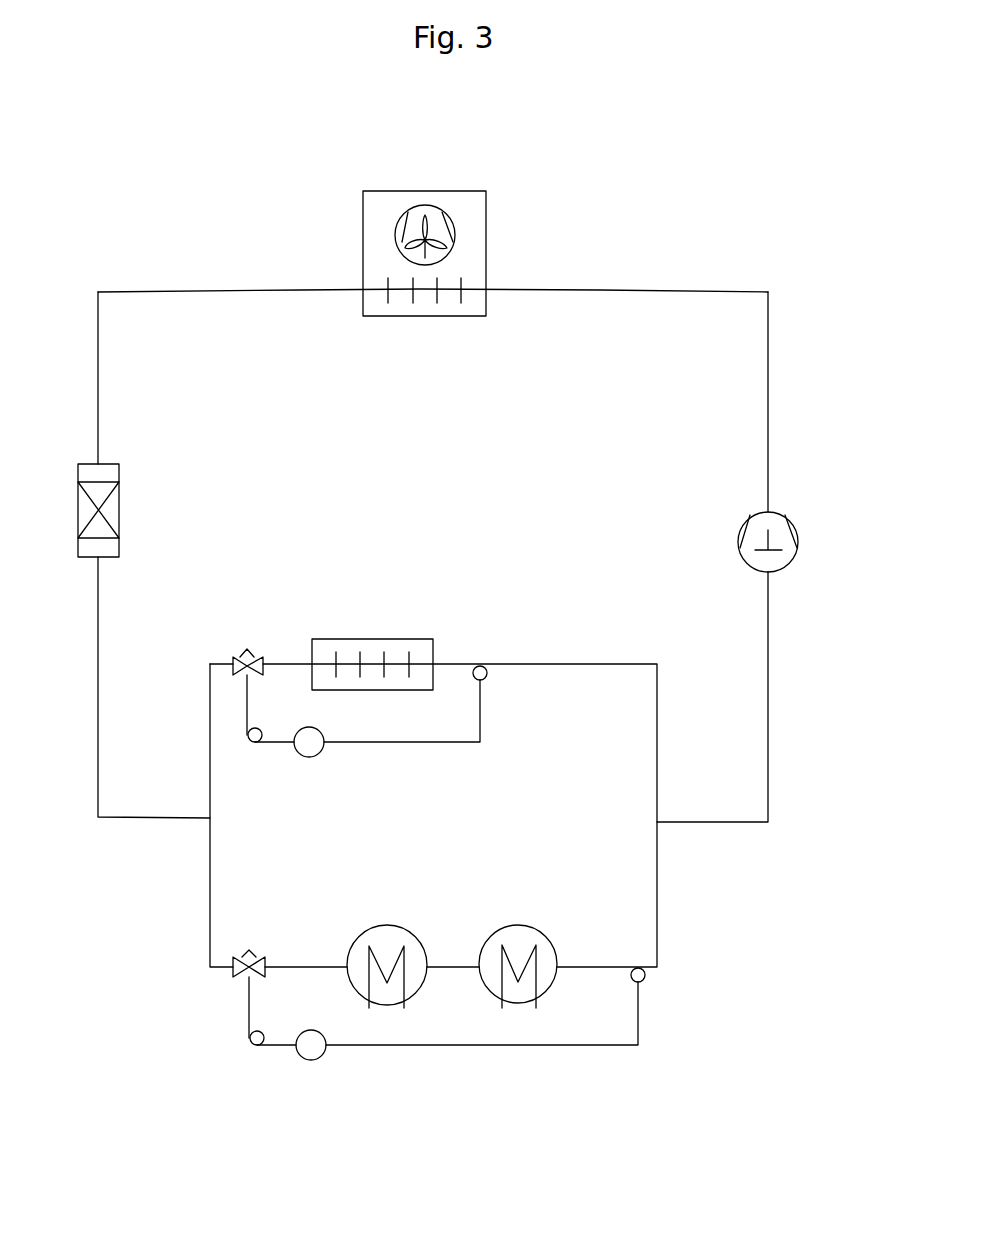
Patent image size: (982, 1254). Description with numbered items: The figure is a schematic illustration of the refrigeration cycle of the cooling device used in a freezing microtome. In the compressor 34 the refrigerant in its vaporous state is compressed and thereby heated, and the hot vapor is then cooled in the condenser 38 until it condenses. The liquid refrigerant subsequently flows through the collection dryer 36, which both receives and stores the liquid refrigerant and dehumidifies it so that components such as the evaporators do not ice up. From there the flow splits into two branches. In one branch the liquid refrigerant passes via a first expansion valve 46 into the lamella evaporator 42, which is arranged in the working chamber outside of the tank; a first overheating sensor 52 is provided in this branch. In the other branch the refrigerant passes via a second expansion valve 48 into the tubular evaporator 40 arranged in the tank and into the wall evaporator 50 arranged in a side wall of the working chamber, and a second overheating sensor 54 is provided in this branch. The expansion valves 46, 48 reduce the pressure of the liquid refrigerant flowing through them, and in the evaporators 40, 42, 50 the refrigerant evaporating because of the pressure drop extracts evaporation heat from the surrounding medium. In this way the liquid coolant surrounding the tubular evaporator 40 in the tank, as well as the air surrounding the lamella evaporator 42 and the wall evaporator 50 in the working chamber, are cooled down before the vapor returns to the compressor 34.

The compressor 34 is at (786, 518).
The collection dryer 36 is at (119, 514).
The condenser 38 is at (486, 236).
The tubular evaporator 40 is at (420, 937).
The lamella evaporator 42 is at (388, 637).
The first expansion valve 46 is at (254, 655).
The second expansion valve 48 is at (258, 958).
The wall evaporator 50 is at (556, 946).
The first overheating sensor 52 is at (322, 753).
The second overheating sensor 54 is at (323, 1057).